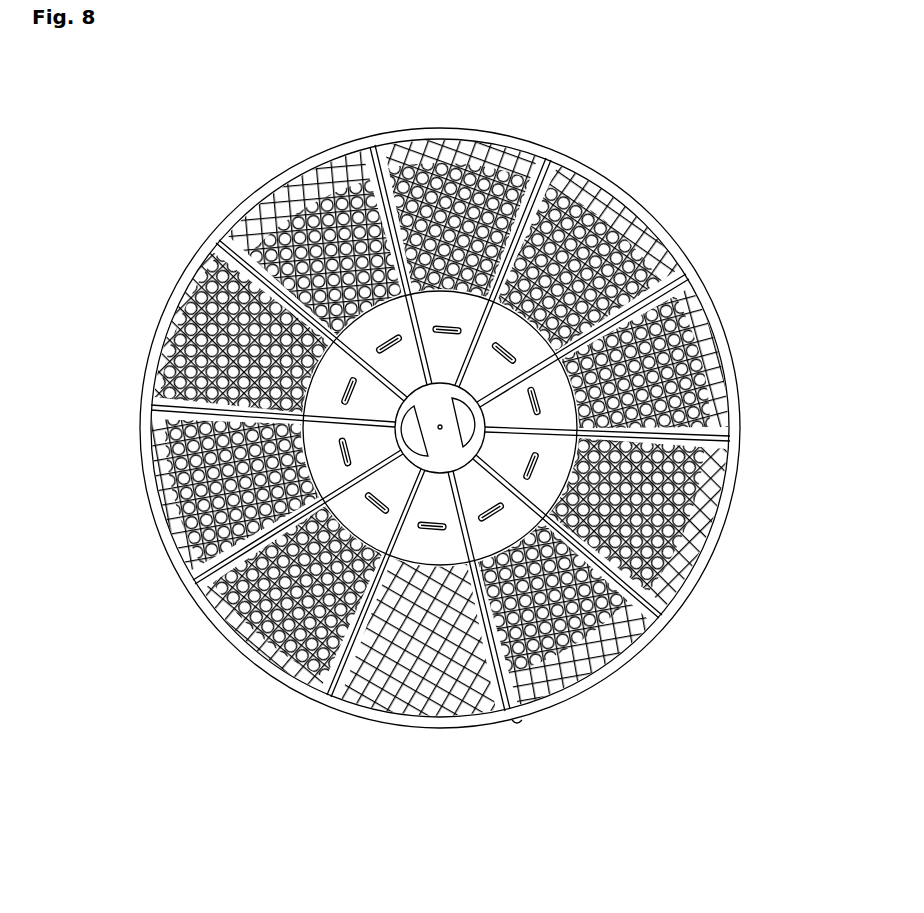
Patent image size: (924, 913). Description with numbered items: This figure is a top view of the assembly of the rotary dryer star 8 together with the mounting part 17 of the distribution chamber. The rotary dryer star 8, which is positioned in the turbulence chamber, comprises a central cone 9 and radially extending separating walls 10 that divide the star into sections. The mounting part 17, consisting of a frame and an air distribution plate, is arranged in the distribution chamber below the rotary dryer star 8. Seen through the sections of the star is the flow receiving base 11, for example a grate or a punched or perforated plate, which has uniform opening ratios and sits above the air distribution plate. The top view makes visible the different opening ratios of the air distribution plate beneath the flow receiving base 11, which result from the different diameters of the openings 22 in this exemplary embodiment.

The rotary dryer star 8 is at (386, 409).
The mounting part 17 is at (108, 80).
The cone 9 is at (430, 397).
The separating walls 10 is at (635, 587).
The flow receiving base 11 is at (658, 320).
The openings 22 is at (623, 243).